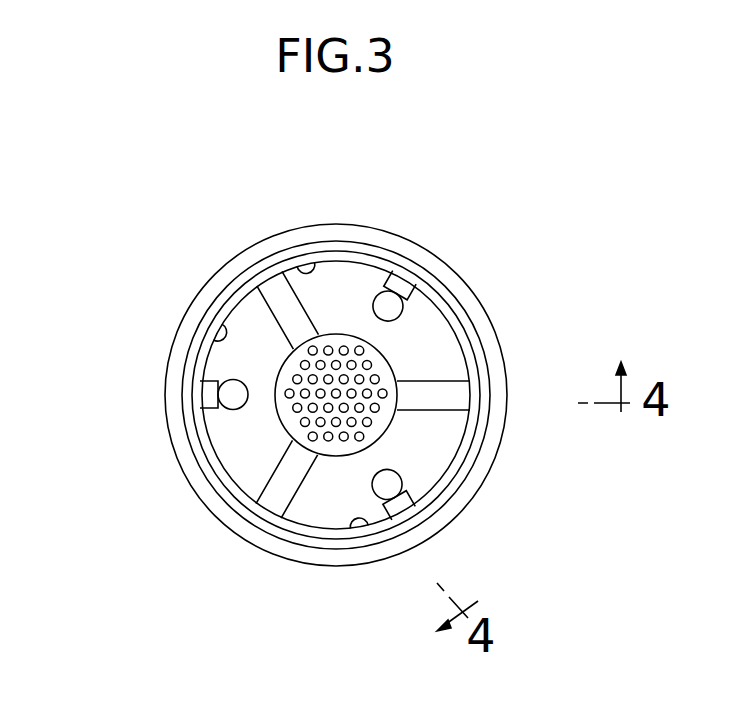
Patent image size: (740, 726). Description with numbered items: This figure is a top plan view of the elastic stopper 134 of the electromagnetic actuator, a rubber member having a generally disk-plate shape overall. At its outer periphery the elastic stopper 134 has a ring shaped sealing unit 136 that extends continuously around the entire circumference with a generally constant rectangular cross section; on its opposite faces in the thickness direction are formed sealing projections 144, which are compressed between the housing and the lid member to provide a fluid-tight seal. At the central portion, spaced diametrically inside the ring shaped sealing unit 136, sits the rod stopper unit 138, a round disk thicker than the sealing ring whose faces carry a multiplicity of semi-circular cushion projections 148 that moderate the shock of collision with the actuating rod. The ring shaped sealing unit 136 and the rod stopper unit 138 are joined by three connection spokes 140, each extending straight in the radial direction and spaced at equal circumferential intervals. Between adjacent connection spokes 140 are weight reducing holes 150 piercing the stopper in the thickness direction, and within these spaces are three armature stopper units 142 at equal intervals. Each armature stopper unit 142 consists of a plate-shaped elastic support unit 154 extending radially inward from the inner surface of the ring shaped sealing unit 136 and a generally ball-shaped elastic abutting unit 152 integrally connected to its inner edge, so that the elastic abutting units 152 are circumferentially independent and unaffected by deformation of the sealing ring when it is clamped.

The elastic stopper 134 is at (509, 158).
The ring shaped sealing unit 136 is at (503, 358).
The rod stopper unit 138 is at (450, 462).
The sealing projections 144 is at (190, 383).
The connection spokes 140 is at (274, 303).
The cushion projections 148 is at (298, 378).
The weight reducing holes 150 is at (306, 262).
The armature stopper units 142 is at (346, 378).
The elastic abutting unit 152 is at (382, 305).
The elastic support unit 154 is at (388, 291).